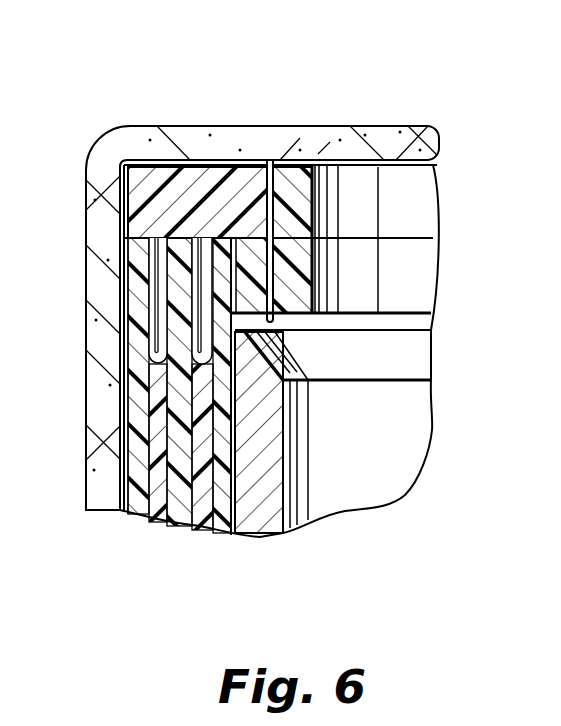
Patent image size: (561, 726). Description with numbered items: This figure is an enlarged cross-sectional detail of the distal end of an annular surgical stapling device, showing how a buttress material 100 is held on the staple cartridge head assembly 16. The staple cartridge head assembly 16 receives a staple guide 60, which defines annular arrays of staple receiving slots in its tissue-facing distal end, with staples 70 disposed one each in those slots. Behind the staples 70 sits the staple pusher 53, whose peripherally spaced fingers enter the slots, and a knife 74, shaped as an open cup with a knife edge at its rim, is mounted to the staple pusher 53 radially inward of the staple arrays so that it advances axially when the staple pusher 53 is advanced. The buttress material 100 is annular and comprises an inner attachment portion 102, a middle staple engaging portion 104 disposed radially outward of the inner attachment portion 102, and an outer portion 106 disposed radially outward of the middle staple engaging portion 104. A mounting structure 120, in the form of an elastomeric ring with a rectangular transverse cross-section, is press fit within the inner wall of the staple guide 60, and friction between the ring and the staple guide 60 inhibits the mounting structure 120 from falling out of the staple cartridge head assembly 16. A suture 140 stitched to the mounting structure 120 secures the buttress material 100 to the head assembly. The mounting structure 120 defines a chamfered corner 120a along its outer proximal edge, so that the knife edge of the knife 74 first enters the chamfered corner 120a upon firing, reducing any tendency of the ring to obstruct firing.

The staple cartridge head assembly 16 is at (118, 485).
The staple pusher 53 is at (161, 431).
The staple guide 60 is at (163, 233).
The staples 70 is at (158, 298).
The knife 74 is at (404, 444).
The buttress material 100 is at (418, 209).
The inner attachment portion 102 is at (300, 167).
The middle staple engaging portion 104 is at (205, 165).
The outer portion 106 is at (136, 140).
The mounting structure 120 is at (413, 289).
The chamfered corner 120a is at (237, 306).
The suture 140 is at (272, 167).